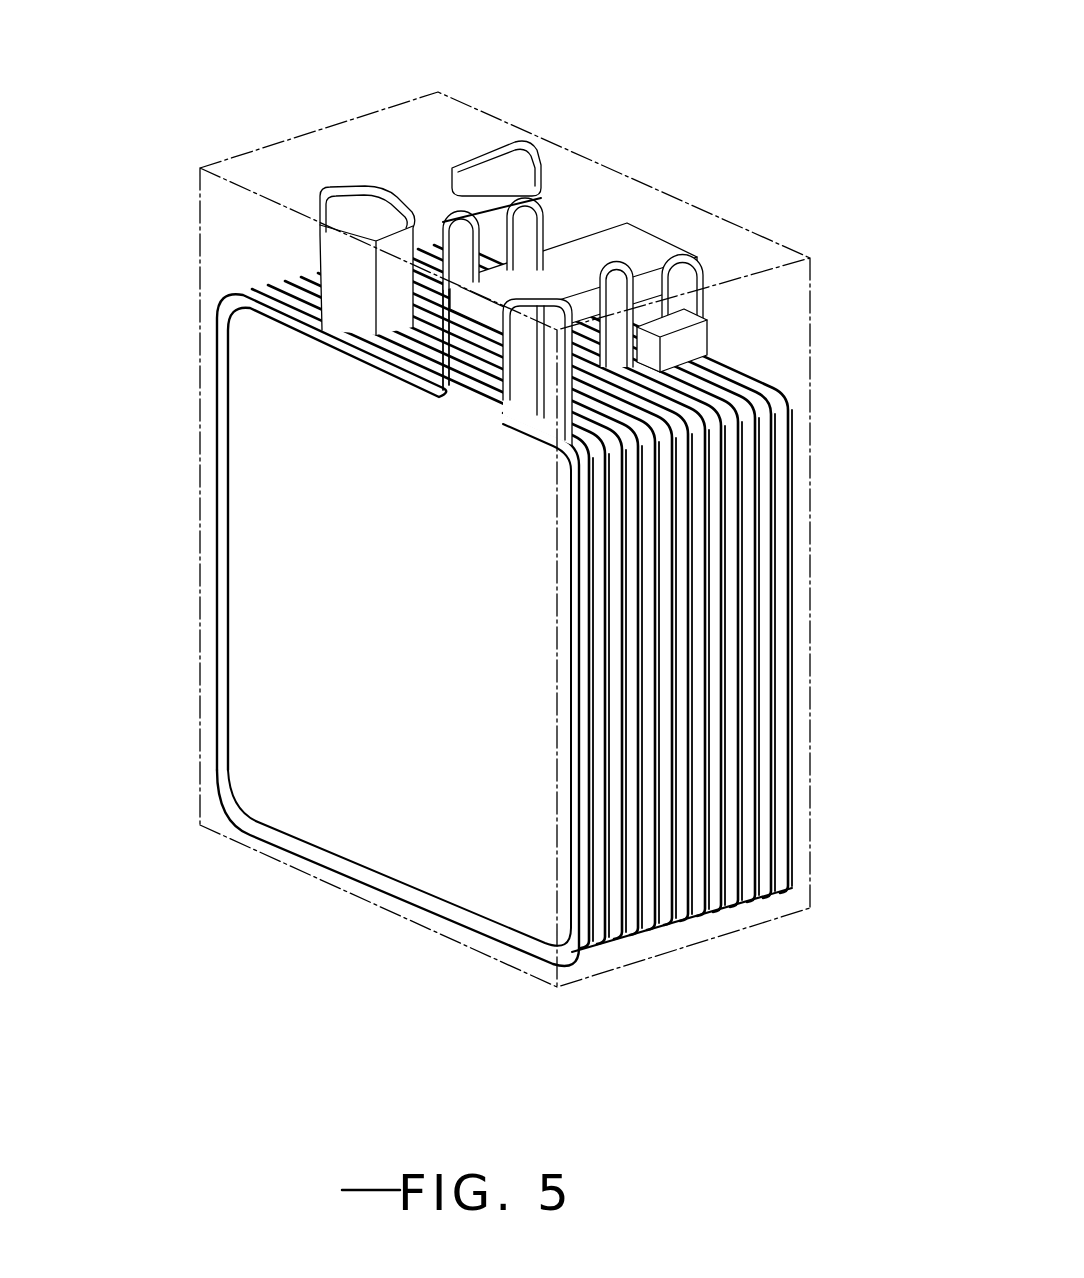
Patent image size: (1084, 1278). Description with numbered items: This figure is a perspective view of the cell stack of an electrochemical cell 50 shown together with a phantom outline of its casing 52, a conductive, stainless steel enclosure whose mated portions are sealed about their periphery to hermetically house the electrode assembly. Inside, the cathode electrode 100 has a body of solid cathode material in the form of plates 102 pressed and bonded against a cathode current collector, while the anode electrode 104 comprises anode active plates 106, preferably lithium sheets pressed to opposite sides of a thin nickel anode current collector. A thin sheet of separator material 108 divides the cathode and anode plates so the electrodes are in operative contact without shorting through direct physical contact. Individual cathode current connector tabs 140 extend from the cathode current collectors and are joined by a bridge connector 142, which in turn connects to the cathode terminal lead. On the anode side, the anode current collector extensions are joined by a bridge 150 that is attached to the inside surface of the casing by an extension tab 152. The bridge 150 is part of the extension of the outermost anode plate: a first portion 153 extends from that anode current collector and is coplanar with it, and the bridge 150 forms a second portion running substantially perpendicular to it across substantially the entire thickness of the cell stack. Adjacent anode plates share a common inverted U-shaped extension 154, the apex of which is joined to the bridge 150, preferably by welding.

The electrochemical cell 50 is at (476, 581).
The casing 52 is at (473, 102).
The cathode electrode 100 is at (476, 672).
The plates 102 is at (780, 888).
The anode electrode 104 is at (266, 594).
The anode active plates 106 is at (318, 720).
The separator material 108 is at (750, 900).
The cathode current connector tabs 140 is at (462, 252).
The bridge connector 142 is at (450, 193).
The bridge 150 is at (657, 247).
The extension tab 152 is at (693, 352).
The first portion 153 is at (492, 360).
The inverted U-shaped extension 154 is at (635, 284).